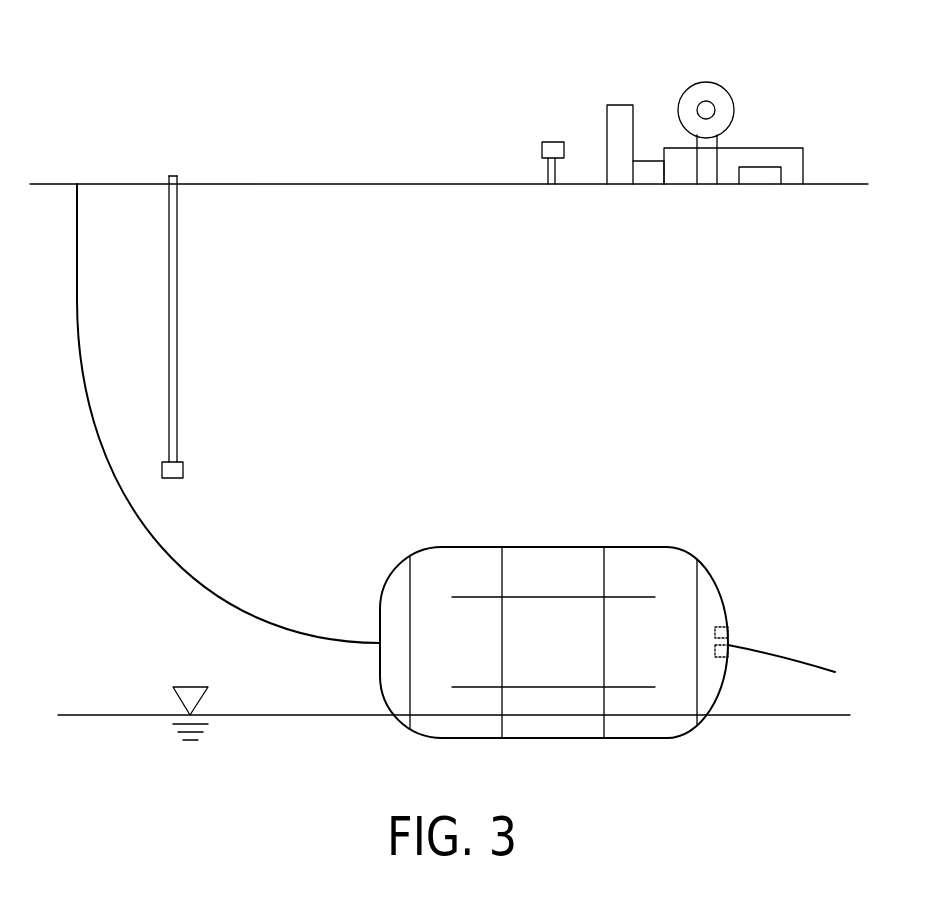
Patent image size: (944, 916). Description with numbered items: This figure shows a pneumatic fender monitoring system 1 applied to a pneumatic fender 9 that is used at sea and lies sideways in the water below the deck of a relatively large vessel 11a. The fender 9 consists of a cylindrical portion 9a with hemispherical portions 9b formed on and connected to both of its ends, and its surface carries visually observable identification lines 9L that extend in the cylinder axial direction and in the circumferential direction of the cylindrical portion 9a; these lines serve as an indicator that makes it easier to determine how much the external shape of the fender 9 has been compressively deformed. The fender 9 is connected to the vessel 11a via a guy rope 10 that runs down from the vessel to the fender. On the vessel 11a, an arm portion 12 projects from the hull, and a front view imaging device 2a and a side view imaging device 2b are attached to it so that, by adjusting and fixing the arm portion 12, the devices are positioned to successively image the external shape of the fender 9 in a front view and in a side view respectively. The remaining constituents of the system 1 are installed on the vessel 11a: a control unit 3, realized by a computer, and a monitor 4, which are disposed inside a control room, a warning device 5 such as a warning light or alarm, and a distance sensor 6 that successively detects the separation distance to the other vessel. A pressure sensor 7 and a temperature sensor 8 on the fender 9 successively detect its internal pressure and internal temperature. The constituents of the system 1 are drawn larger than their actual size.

The pneumatic fender monitoring system 1 is at (363, 88).
The front view imaging device 2a is at (542, 148).
The side view imaging device 2b is at (183, 470).
The control unit 3 is at (760, 160).
The monitor 4 is at (618, 118).
The warning device 5 is at (692, 97).
The distance sensor 6 is at (760, 186).
The pressure sensor 7 is at (730, 633).
The temperature sensor 8 is at (730, 652).
The pneumatic fender 9 is at (545, 570).
The cylindrical portion 9a is at (552, 565).
The hemispherical portions 9b is at (398, 563).
The identification lines 9L is at (410, 672).
The guy rope 10 is at (190, 590).
The vessel 11a is at (243, 203).
The arm portion 12 is at (547, 172).